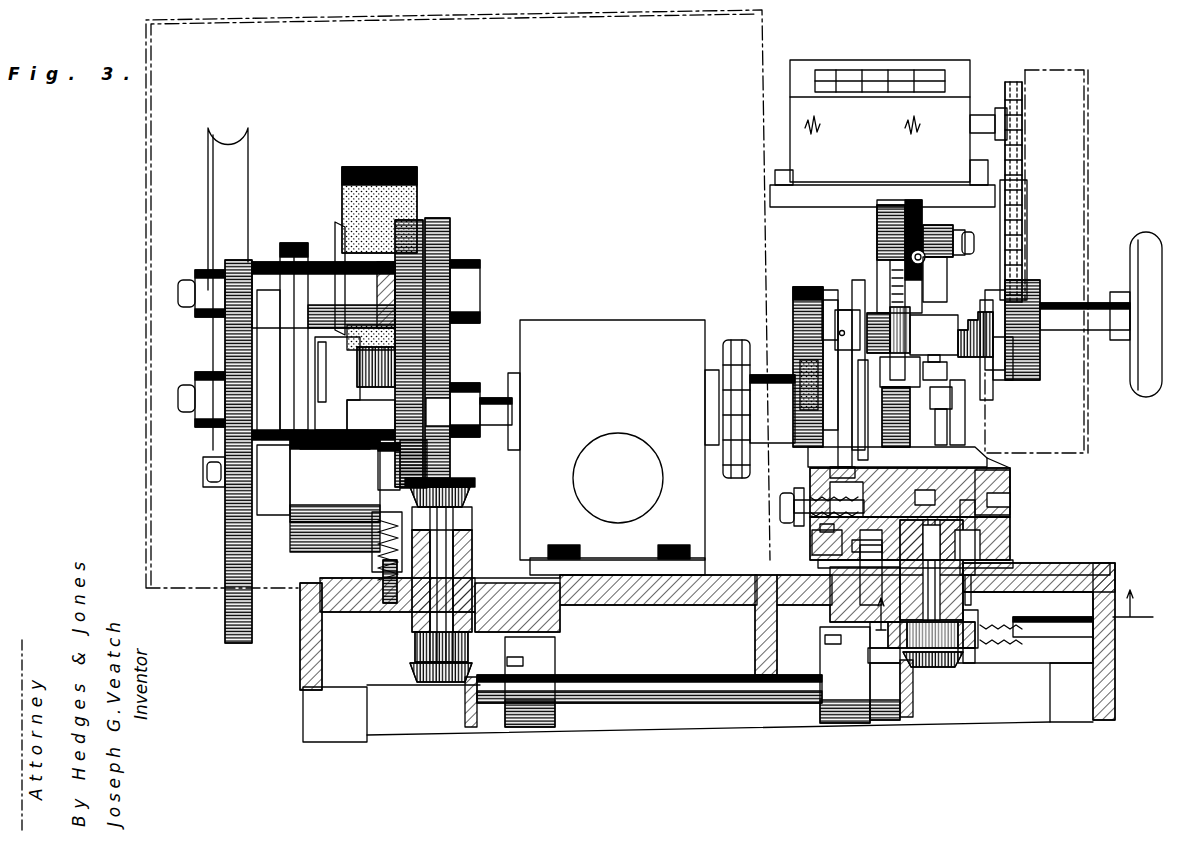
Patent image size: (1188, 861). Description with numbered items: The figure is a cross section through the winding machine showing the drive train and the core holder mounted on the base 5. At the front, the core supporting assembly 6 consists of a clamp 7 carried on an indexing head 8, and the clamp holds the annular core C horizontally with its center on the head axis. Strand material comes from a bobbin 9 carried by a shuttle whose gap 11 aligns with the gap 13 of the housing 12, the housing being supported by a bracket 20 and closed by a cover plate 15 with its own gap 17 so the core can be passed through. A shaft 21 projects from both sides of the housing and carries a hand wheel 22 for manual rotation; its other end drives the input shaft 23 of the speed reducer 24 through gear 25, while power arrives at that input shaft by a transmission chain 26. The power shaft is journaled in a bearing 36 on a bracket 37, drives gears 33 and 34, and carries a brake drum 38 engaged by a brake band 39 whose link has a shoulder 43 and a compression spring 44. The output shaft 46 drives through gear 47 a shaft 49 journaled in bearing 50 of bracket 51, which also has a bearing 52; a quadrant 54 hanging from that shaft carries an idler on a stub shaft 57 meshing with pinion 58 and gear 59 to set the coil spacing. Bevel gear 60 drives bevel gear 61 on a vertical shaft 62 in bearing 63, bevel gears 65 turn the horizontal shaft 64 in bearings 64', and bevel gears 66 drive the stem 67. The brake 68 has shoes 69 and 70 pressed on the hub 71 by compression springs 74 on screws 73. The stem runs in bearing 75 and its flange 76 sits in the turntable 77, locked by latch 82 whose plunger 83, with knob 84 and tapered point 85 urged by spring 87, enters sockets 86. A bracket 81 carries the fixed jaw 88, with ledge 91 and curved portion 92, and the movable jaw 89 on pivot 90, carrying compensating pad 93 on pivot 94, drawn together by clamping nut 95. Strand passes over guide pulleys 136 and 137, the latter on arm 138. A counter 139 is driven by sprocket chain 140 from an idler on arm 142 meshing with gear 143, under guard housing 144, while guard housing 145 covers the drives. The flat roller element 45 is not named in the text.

The base 5 is at (300, 700).
The core supporting assembly 6 is at (1012, 517).
The clamp 7 is at (830, 290).
The indexing head 8 is at (1012, 528).
The bobbin 9 is at (930, 300).
The gap 11 is at (1012, 618).
The housing 12 is at (892, 200).
The gap 13 is at (900, 265).
The cover plate 15 is at (877, 212).
The gap 17 is at (870, 313).
The bracket 20 is at (940, 226).
The shaft 21 is at (1078, 293).
The hand wheel 22 is at (1148, 232).
The input shaft 23 is at (728, 402).
The speed reducer 24 is at (560, 320).
The gear 25 is at (810, 287).
The transmission chain 26 is at (738, 340).
The gear 33 is at (436, 218).
The gear 34 is at (458, 383).
The bearing 36 is at (336, 235).
The bracket 37 is at (322, 362).
The brake drum 38 is at (368, 408).
The brake band 39 is at (398, 167).
The shoulder 43 is at (375, 540).
The compression spring 44 is at (383, 568).
The roller 45 is at (248, 128).
The output shaft 46 is at (500, 425).
The gear 47 is at (438, 412).
The shaft 49 is at (440, 260).
The bearing 50 is at (325, 272).
The bracket 51 is at (294, 243).
The bearing 52 is at (340, 462).
The quadrant 54 is at (276, 400).
The stub shaft 57 is at (178, 400).
The pinion 58 is at (228, 262).
The gear 59 is at (240, 643).
The bevel gear 60 is at (405, 466).
The bevel gear 61 is at (470, 495).
The vertical shaft 62 is at (412, 640).
The bearing 63 is at (412, 620).
The horizontal shaft 64 is at (649, 722).
The bearings 64' is at (687, 698).
The bevel gears 65 is at (448, 690).
The bevel gears 66 is at (915, 680).
The stem 67 is at (938, 612).
The brake 68 is at (972, 665).
The brake shoe 69 is at (875, 660).
The brake shoe 70 is at (975, 622).
The hub 71 is at (931, 635).
The screws 73 is at (1032, 617).
The compression springs 74 is at (1010, 640).
The bearing 75 is at (1012, 554).
The flange 76 is at (1000, 470).
The turntable 77 is at (1012, 478).
The bracket 81 is at (897, 458).
The latch 82 is at (796, 520).
The plunger 83 is at (806, 498).
The knob 84 is at (780, 506).
The tapered point 85 is at (860, 556).
The sockets 86 is at (1024, 496).
The spring 87 is at (818, 532).
The fixed clamping jaw 88 is at (873, 415).
The movable clamping jaw 89 is at (838, 440).
The pivot 90 is at (850, 470).
The ledge 91 is at (918, 350).
The arcuately curved portion 92 is at (904, 330).
The compensating pad 93 is at (850, 310).
The pivot 94 is at (800, 335).
The clamping nut 95 is at (795, 364).
The guide pulley 136 is at (930, 410).
The guide pulley 137 is at (947, 378).
The arm 138 is at (928, 432).
The counter 139 is at (920, 60).
The sprocket chain 140 is at (1022, 214).
The arm 142 is at (988, 395).
The gear 143 is at (1032, 280).
The sheet metal guard housing 144 is at (1040, 70).
The guard housing 145 is at (768, 30).
The annular core C is at (1008, 372).